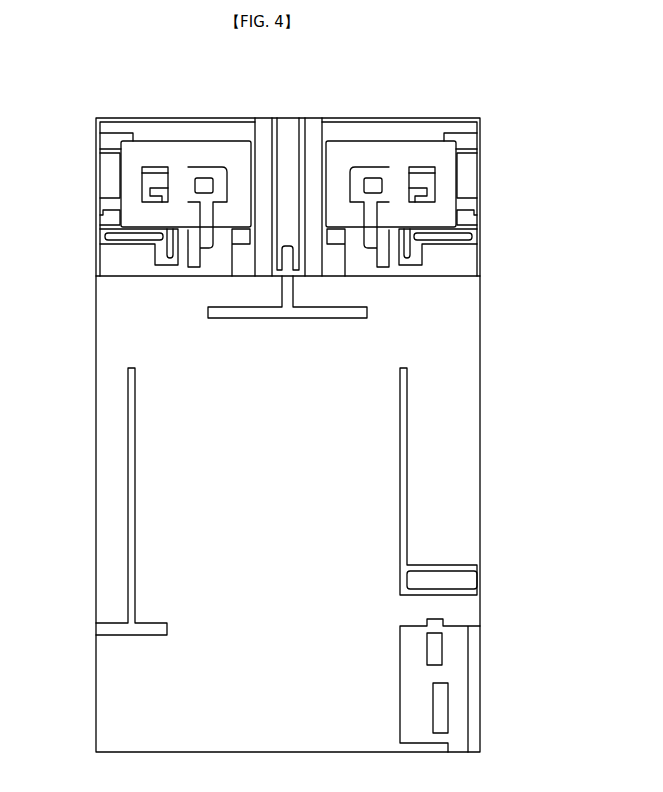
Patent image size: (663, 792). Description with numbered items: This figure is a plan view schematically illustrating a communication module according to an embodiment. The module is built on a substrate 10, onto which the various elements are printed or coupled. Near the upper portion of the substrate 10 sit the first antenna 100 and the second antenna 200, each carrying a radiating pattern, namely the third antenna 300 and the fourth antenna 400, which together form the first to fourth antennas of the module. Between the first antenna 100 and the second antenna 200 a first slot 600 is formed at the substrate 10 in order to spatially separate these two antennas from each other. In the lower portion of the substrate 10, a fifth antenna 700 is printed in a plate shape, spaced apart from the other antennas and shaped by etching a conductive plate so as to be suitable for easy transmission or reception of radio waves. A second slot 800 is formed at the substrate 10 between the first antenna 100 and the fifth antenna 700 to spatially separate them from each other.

The substrate 10 is at (94, 546).
The first antenna 100 is at (486, 167).
The second antenna 200 is at (92, 167).
The third antenna 300 is at (398, 157).
The fourth antenna 400 is at (177, 157).
The first slot 600 is at (263, 313).
The fifth antenna 700 is at (440, 712).
The second slot 800 is at (450, 570).